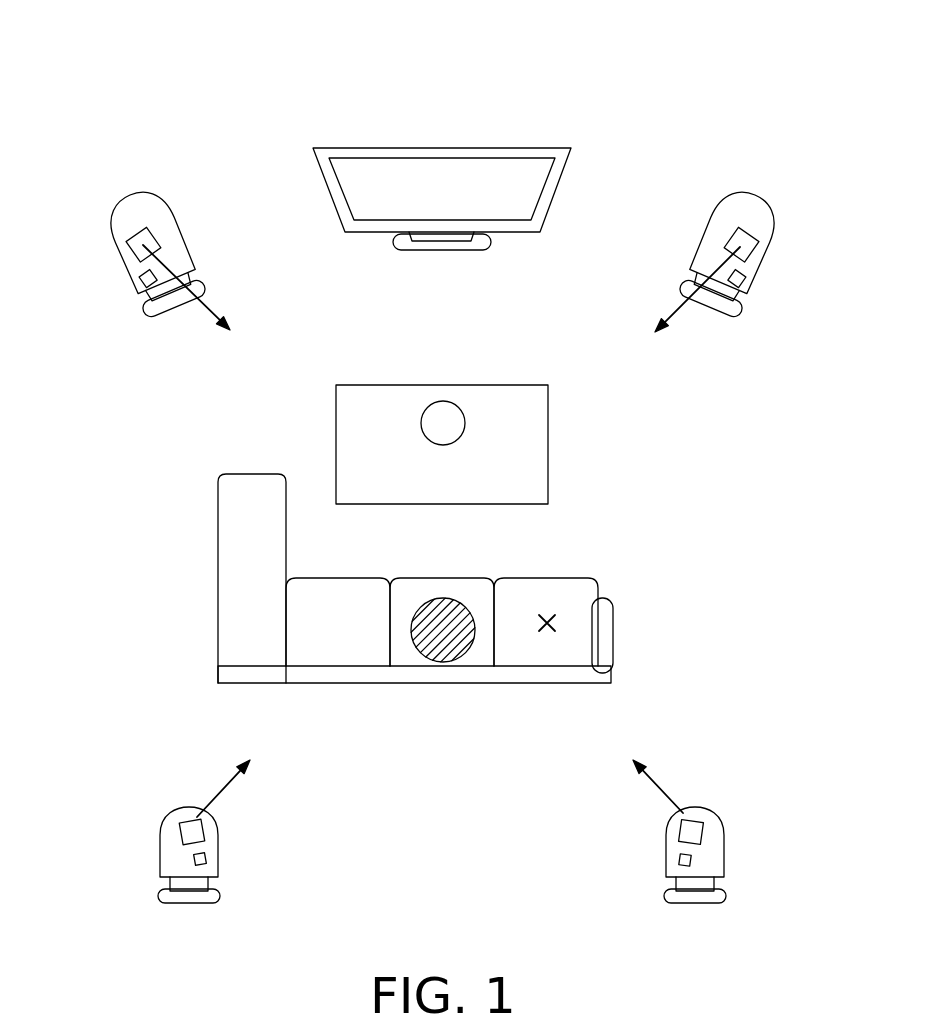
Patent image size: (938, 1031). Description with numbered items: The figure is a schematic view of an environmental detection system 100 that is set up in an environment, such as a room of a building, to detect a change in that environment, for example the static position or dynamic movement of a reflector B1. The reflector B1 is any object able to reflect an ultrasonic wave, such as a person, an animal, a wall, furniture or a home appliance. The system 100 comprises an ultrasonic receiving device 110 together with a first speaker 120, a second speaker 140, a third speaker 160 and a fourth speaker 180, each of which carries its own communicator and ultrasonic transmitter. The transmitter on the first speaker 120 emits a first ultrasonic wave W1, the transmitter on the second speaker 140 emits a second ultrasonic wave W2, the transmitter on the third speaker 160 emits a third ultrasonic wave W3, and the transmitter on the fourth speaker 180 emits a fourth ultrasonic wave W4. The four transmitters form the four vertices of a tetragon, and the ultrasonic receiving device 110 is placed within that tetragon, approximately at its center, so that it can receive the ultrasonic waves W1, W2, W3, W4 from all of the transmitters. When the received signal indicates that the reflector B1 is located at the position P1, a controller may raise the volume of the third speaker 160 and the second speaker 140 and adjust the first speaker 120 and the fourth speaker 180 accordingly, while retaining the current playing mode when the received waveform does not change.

The environmental detection system 100 is at (129, 70).
The ultrasonic receiving device 110 is at (443, 400).
The first speaker 120 is at (110, 243).
The second speaker 140 is at (776, 238).
The third speaker 160 is at (712, 817).
The fourth speaker 180 is at (173, 818).
The first ultrasonic wave W1 is at (206, 287).
The second ultrasonic wave W2 is at (697, 297).
The third ultrasonic wave W3 is at (663, 785).
The fourth ultrasonic wave W4 is at (220, 788).
The reflector B1 is at (443, 662).
The position P1 is at (548, 634).